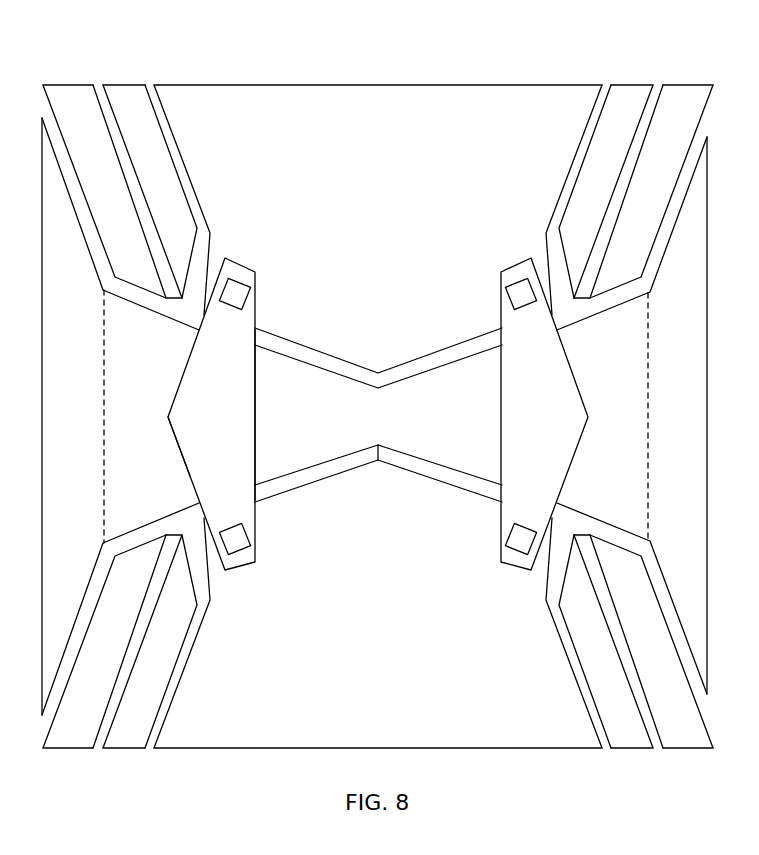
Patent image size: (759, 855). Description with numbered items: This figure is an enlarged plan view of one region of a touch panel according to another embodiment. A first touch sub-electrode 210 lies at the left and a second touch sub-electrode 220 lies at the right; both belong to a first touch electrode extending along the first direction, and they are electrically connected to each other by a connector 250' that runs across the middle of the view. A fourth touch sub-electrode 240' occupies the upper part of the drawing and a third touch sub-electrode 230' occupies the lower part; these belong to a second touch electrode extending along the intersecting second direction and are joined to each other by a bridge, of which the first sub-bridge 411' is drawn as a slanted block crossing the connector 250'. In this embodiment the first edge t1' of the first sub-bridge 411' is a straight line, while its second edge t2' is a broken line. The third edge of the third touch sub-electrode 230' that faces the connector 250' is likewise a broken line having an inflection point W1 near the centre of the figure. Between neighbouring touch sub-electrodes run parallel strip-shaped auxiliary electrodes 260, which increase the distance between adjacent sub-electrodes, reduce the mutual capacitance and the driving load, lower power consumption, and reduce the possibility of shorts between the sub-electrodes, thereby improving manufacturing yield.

The first touch sub-electrode 210 is at (97, 432).
The second touch sub-electrode 220 is at (700, 432).
The third touch sub-electrode 230' is at (378, 633).
The fourth touch sub-electrode 240' is at (322, 200).
The connector 250' is at (378, 415).
The slanted strip 260 is at (636, 165).
The first sub-bridge 411' is at (378, 414).
The first edge t1' is at (287, 415).
The second edge t2' is at (160, 446).
The inflection point W1 is at (378, 460).